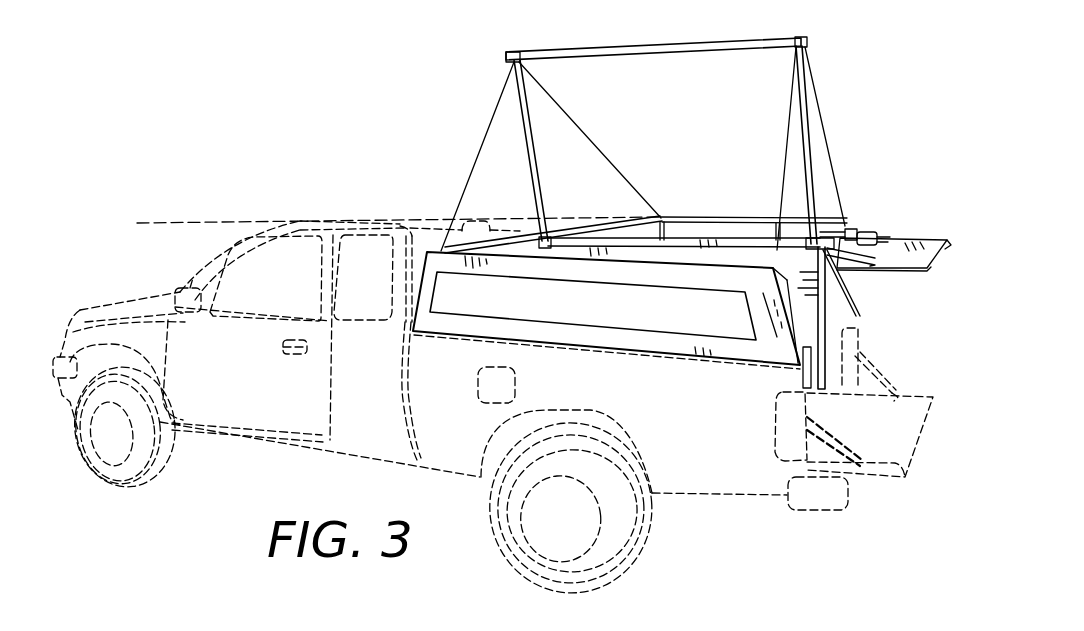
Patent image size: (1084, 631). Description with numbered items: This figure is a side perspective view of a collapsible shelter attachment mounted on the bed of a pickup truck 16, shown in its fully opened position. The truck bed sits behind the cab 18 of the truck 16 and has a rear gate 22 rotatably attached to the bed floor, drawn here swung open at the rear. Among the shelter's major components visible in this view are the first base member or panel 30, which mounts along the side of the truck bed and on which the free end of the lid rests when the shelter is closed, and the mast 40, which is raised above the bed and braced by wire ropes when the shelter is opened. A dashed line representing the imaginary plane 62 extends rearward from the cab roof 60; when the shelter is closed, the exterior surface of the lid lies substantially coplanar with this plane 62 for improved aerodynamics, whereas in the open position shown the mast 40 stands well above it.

The pickup truck 16 is at (96, 318).
The cab 18 is at (236, 264).
The rear gate 22 is at (897, 413).
The first base member or panel 30 is at (571, 316).
The mast 40 is at (713, 44).
The cab roof 60 is at (333, 222).
The imaginary plane 62 is at (238, 221).